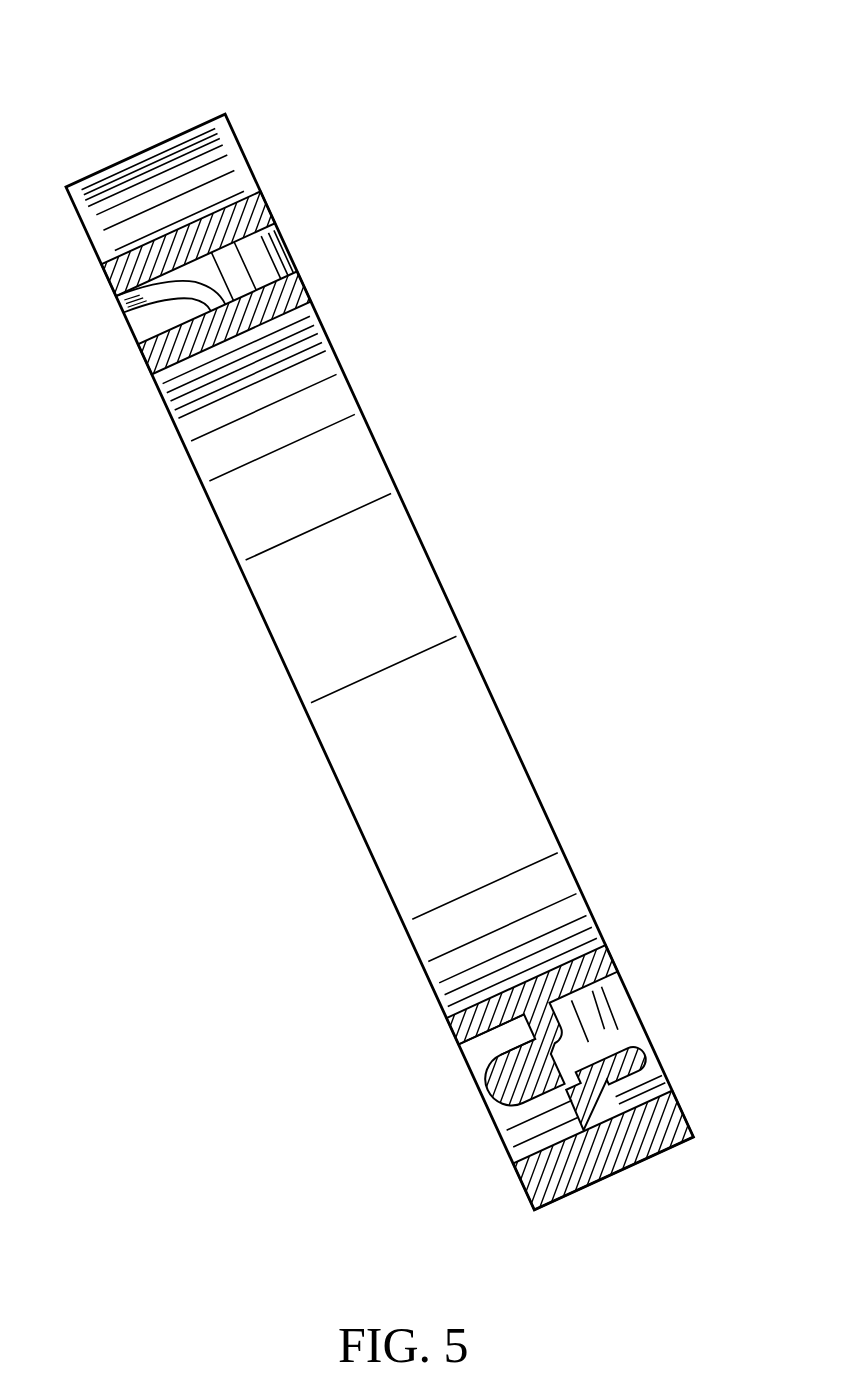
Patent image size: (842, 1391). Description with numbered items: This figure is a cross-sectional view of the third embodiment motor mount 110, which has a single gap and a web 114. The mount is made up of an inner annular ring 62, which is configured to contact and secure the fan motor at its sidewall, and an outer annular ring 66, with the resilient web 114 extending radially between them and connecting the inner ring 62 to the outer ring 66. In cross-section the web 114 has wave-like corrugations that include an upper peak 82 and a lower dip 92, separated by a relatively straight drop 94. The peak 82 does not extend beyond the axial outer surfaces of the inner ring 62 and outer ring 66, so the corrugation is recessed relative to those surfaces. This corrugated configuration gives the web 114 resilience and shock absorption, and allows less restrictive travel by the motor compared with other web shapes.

The third embodiment motor mount 110 is at (392, 158).
The outer annular ring 66 is at (268, 213).
The inner annular ring 62 is at (303, 287).
The lower dip 92 is at (493, 1117).
The relatively straight drop 94 is at (635, 1022).
The upper peak 82 is at (652, 1050).
The web 114 is at (484, 1054).